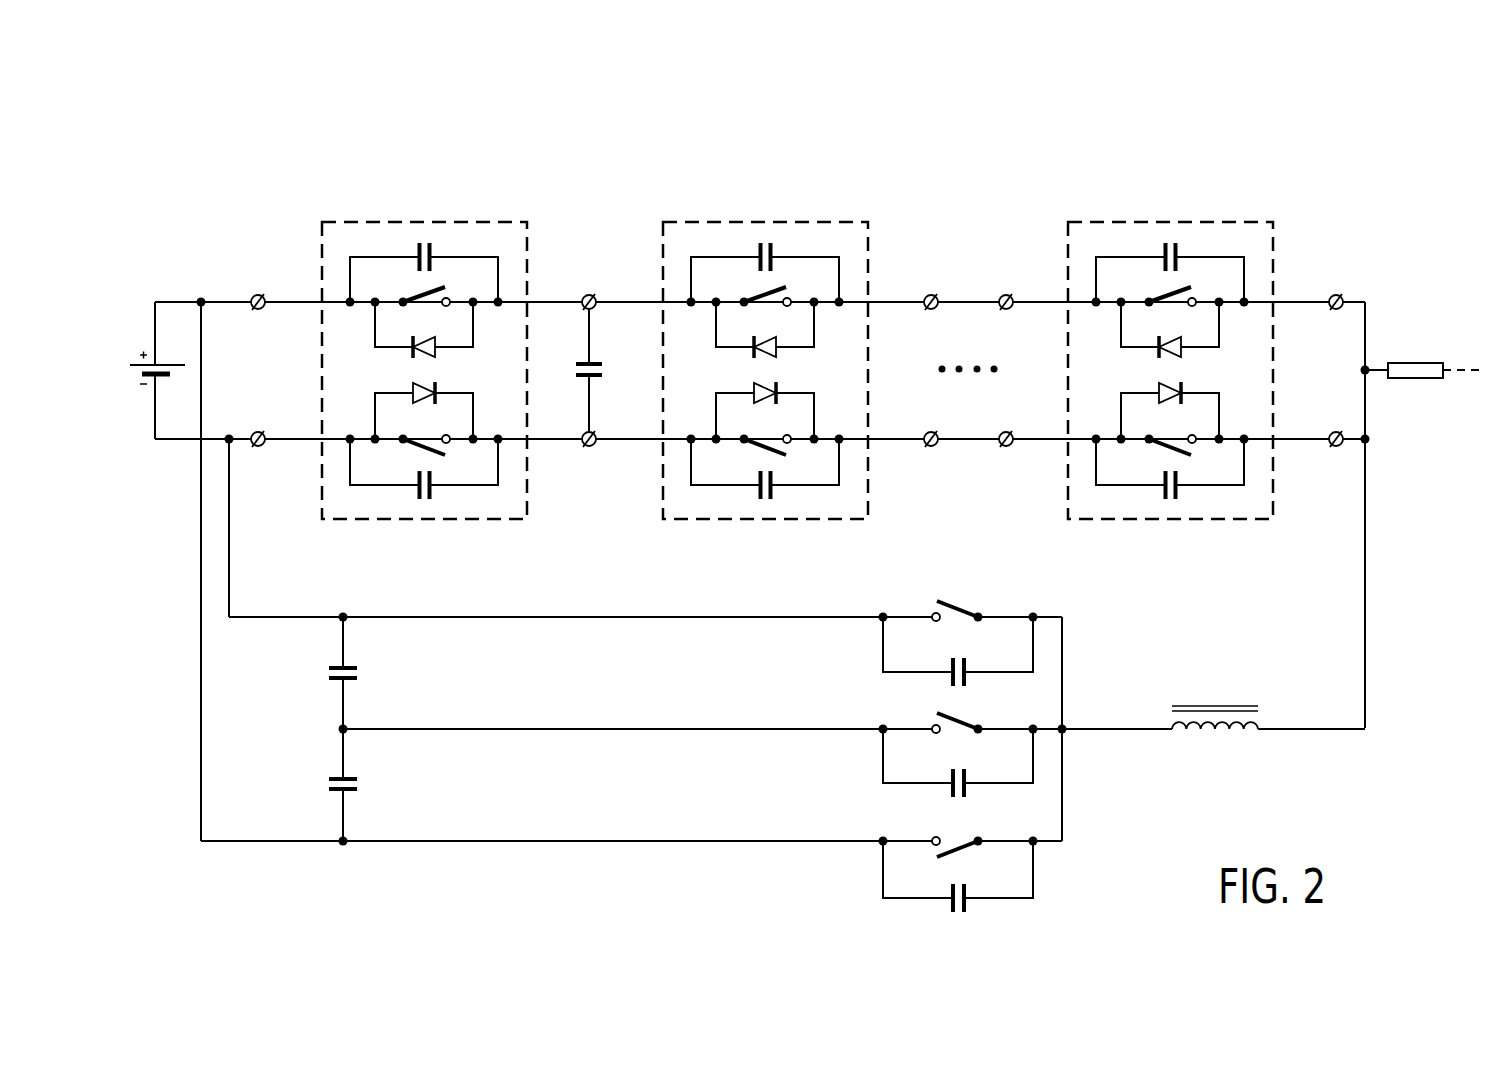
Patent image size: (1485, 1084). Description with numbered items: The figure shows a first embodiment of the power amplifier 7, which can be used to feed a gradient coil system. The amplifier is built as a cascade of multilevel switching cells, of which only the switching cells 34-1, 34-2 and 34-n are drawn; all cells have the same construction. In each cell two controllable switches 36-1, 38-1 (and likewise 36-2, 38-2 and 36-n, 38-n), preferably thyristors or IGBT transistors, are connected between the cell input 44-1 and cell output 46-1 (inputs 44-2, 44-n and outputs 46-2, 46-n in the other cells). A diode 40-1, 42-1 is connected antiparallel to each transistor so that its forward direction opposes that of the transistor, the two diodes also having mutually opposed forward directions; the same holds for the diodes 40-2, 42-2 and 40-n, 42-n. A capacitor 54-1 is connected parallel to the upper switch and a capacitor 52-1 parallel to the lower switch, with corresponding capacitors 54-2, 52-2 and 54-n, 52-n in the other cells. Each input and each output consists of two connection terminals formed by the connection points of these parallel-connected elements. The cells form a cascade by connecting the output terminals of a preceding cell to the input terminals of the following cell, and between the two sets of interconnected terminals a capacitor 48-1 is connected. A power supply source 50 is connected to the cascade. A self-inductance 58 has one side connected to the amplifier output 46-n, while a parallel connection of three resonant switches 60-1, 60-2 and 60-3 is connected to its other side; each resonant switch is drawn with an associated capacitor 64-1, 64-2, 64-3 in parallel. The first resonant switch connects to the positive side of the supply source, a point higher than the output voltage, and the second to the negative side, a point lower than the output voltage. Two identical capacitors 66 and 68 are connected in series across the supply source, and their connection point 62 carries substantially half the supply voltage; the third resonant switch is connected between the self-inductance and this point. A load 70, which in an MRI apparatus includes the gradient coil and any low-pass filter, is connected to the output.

The power amplifier 7 is at (282, 245).
The switching cell 34-1 is at (404, 222).
The switching cell 34-2 is at (765, 347).
The switching cell 34-n is at (1170, 347).
The controllable switch 36-1 is at (426, 293).
The controllable switch 36-2 is at (750, 286).
The controllable switch 36-n is at (1155, 286).
The controllable switch 38-1 is at (426, 452).
The controllable switch 38-2 is at (750, 457).
The controllable switch 38-n is at (1155, 457).
The diode 40-1 is at (421, 337).
The diode 40-2 is at (765, 330).
The diode 40-n is at (1170, 330).
The diode 42-1 is at (421, 401).
The diode 42-2 is at (765, 410).
The diode 42-n is at (1170, 410).
The input 44-1 is at (258, 310).
The input 44-2 is at (596, 437).
The input 44-n is at (1006, 310).
The output 46-1 is at (583, 437).
The output 46-2 is at (931, 310).
The output 46-n is at (1336, 310).
The capacitor 48-1 is at (604, 378).
The power supply source 50 is at (172, 376).
The capacitor 52-1 is at (434, 484).
The capacitor 52-2 is at (765, 469).
The capacitor 52-n is at (1170, 469).
The capacitor 54-1 is at (434, 264).
The capacitor 54-2 is at (765, 272).
The capacitor 54-n is at (1170, 272).
The self-inductance 58 is at (1222, 717).
The resonant switch 60-1 is at (960, 836).
The resonant switch 60-2 is at (962, 606).
The resonant switch 60-3 is at (962, 718).
The connection point 62 is at (346, 728).
The first output capacitor 64-1 is at (959, 889).
The second output capacitor 64-2 is at (959, 664).
The third output capacitor 64-3 is at (959, 775).
The capacitor 66 is at (355, 675).
The capacitor 68 is at (355, 786).
The load 70 is at (1415, 363).